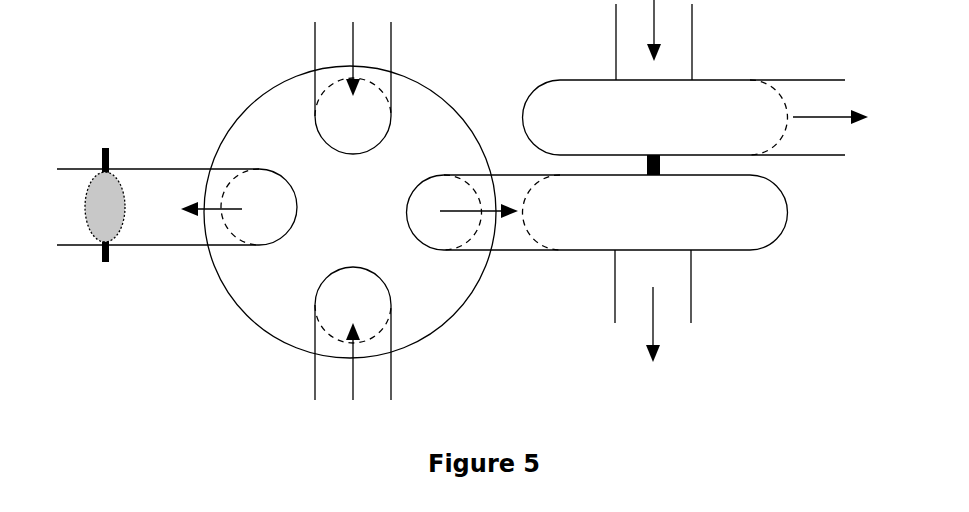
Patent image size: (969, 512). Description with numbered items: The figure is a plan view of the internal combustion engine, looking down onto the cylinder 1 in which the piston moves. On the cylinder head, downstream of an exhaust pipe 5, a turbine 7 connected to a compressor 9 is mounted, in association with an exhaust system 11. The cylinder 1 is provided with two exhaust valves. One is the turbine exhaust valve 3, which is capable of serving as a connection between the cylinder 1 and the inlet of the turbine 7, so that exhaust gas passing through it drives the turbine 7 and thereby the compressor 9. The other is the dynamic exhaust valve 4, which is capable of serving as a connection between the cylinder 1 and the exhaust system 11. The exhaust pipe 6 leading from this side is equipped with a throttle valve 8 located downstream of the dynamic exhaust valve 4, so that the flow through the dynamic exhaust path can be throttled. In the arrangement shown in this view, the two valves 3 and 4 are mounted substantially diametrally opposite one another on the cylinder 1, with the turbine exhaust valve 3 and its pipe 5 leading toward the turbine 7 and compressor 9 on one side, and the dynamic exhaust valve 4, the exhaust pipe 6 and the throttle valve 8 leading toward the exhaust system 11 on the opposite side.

The cylinder 1 is at (350, 212).
The turbine exhaust valve 3 is at (463, 212).
The dynamic exhaust valve 4 is at (259, 207).
The exhaust pipe 5 is at (526, 214).
The exhaust pipe 6 is at (158, 207).
The turbine 7 is at (616, 202).
The throttle valve 8 is at (84, 197).
The compressor 9 is at (695, 77).
The exhaust system 11 is at (352, 301).